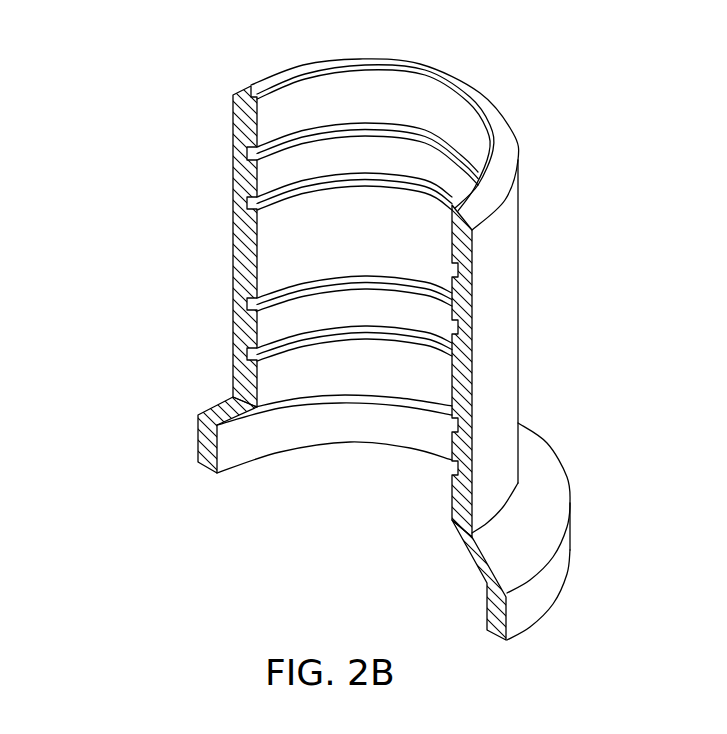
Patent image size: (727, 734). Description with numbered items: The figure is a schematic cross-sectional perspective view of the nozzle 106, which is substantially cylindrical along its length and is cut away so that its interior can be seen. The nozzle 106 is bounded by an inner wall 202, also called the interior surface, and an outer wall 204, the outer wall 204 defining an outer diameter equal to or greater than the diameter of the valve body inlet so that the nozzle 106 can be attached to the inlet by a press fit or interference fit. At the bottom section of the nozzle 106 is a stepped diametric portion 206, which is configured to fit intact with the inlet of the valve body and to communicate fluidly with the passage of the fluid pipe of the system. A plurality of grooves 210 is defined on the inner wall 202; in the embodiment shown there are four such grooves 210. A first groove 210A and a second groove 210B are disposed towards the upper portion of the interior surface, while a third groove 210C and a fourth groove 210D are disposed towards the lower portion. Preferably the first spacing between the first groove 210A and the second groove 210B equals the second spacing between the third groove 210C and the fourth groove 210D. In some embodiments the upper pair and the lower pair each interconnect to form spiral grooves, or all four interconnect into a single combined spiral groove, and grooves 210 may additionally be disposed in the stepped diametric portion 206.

The nozzle 106 is at (190, 57).
The inner wall 202 is at (413, 103).
The outer wall 204 is at (518, 347).
The stepped diametric portion 206 is at (556, 577).
The grooves 210 is at (130, 142).
The first groove 210A is at (233, 152).
The second groove 210B is at (233, 203).
The third groove 210C is at (233, 303).
The fourth groove 210D is at (233, 352).